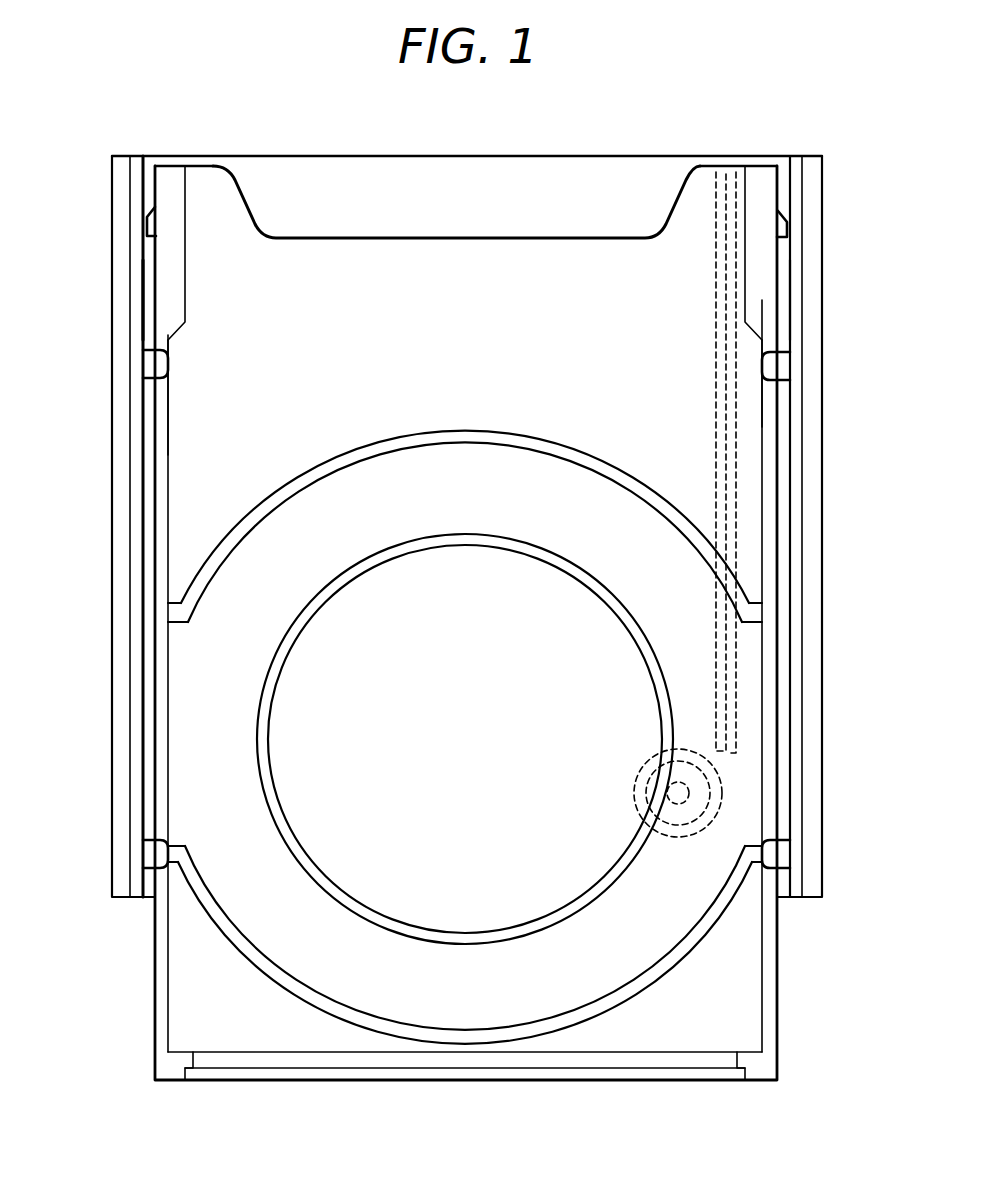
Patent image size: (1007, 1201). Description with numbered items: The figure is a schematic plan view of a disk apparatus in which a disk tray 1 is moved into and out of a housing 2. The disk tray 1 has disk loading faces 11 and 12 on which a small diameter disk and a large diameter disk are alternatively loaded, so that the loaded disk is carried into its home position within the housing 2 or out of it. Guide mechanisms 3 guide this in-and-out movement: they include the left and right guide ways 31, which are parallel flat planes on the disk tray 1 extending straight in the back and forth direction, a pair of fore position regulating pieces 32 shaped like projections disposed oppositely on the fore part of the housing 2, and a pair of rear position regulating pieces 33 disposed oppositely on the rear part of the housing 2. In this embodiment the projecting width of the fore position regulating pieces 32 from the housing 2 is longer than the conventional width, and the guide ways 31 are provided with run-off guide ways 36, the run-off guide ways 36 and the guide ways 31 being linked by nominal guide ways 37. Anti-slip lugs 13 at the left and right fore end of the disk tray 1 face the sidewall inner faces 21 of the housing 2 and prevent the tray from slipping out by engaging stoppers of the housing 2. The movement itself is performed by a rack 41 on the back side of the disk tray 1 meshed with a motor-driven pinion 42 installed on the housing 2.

The disk tray 1 is at (800, 1046).
The housing 2 is at (832, 290).
The guide mechanism 3 is at (268, 453).
The disk loading face 11 is at (510, 575).
The disk loading face 12 is at (430, 458).
The anti-slip lug 13 is at (150, 228).
The sidewall inner face 21 is at (160, 302).
The guide way 31 is at (170, 459).
The fore position regulating piece 32 is at (162, 372).
The rear position regulating piece 33 is at (165, 851).
The run-off guide way 36 is at (186, 238).
The nominal guide way 37 is at (187, 318).
The rack 41 is at (734, 686).
The pinion 42 is at (722, 795).